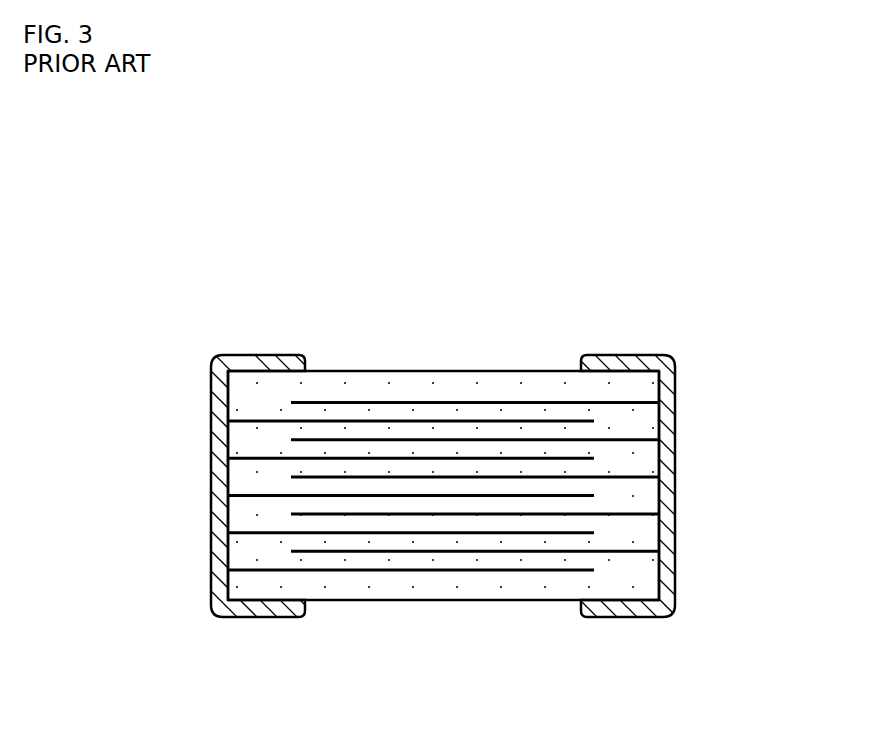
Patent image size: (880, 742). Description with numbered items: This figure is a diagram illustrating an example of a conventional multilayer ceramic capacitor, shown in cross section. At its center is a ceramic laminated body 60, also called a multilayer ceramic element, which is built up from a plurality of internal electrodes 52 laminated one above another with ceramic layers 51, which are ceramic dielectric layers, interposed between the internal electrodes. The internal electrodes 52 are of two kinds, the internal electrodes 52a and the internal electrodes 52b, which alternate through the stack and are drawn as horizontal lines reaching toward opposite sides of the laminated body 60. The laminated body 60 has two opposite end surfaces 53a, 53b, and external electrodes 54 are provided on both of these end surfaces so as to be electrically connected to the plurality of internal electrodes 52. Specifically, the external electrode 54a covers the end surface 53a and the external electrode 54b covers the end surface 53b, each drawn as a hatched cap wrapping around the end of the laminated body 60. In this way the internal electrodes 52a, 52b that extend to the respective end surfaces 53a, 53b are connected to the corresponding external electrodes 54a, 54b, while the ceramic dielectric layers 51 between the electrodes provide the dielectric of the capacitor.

The ceramic laminated body 60 is at (431, 366).
The ceramic layer 51 is at (551, 435).
The internal electrode 52 is at (443, 475).
The internal electrode 52a is at (397, 458).
The internal electrode 52b is at (322, 515).
The end surface 53a is at (222, 447).
The end surface 53b is at (673, 418).
The external electrode 54 is at (444, 531).
The external electrode 54a is at (212, 525).
The external electrode 54b is at (675, 505).